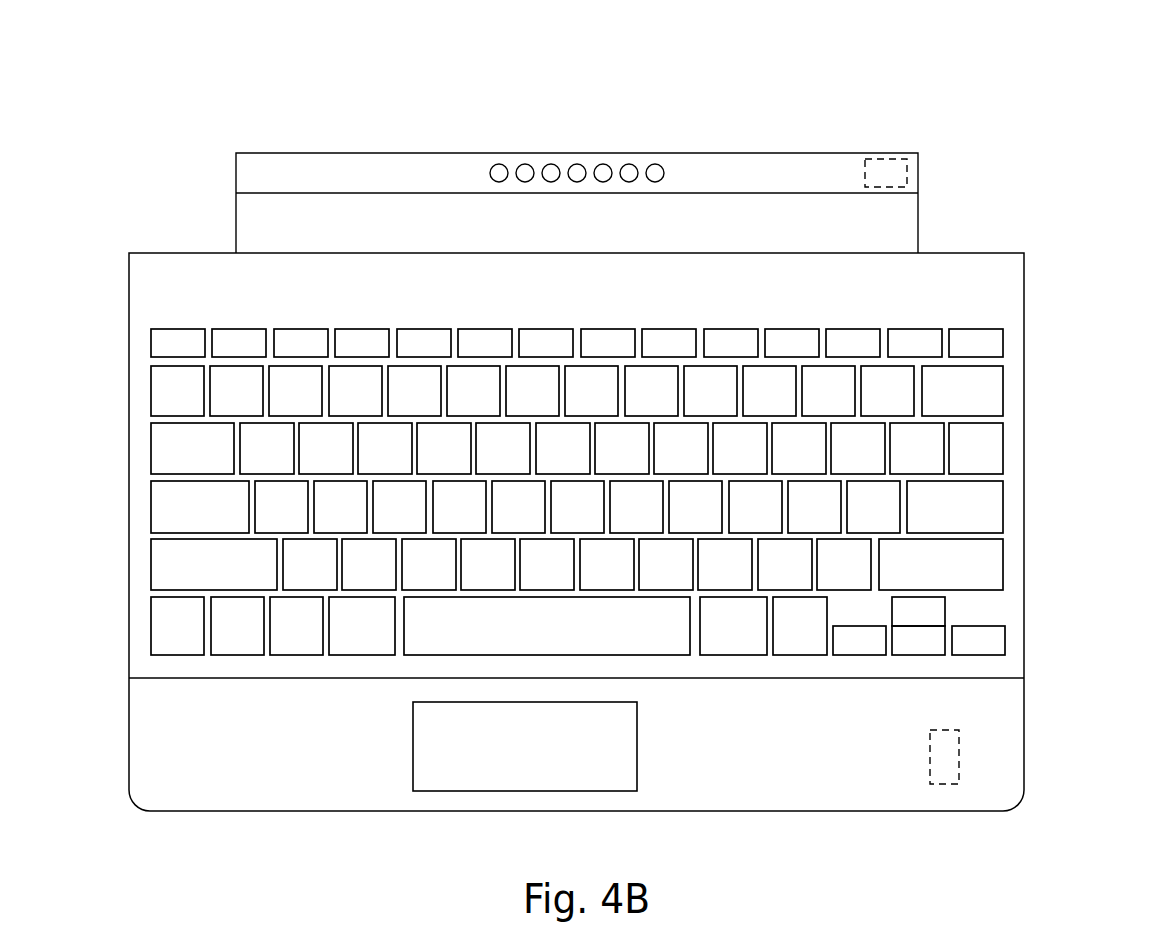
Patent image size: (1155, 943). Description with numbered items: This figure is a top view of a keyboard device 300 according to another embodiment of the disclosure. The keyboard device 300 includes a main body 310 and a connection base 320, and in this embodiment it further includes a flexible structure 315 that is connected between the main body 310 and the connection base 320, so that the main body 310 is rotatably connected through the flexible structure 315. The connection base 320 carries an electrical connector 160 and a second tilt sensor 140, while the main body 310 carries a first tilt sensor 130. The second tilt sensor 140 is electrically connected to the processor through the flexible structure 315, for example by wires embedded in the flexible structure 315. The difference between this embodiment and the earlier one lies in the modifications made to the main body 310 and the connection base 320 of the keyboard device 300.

The keyboard device 300 is at (87, 49).
The main body 310 is at (1024, 383).
The flexible structure 315 is at (918, 228).
The connection base 320 is at (778, 153).
The electrical connector 160 is at (653, 164).
The second tilt sensor 140 is at (907, 163).
The first tilt sensor 130 is at (959, 748).